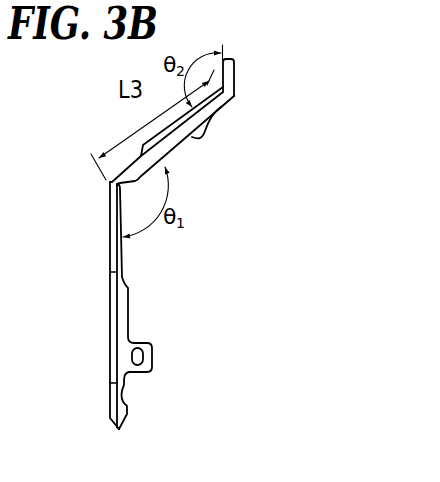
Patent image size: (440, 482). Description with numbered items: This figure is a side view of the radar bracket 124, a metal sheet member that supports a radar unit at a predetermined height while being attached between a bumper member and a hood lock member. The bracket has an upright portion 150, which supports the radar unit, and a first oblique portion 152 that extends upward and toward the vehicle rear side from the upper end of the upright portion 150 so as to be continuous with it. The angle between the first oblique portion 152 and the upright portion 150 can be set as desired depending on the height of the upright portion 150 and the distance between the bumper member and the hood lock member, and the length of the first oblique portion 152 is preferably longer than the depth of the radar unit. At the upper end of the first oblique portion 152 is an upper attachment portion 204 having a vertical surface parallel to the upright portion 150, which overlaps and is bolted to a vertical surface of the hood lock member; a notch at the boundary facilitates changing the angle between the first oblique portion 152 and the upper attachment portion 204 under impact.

The radar bracket 124 is at (229, 237).
The upright portion 150 is at (128, 306).
The first oblique portion 152 is at (182, 142).
The upper attachment portion 204 is at (235, 72).